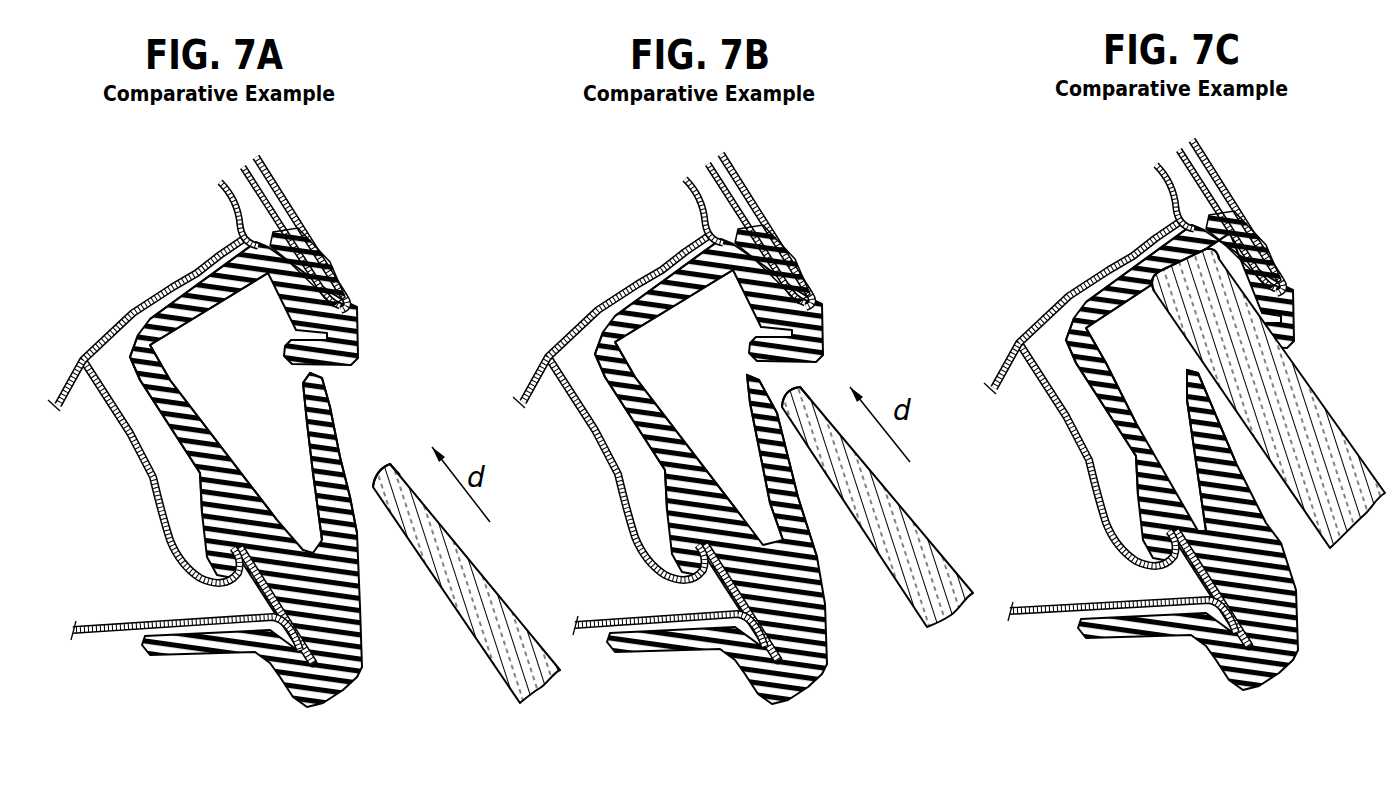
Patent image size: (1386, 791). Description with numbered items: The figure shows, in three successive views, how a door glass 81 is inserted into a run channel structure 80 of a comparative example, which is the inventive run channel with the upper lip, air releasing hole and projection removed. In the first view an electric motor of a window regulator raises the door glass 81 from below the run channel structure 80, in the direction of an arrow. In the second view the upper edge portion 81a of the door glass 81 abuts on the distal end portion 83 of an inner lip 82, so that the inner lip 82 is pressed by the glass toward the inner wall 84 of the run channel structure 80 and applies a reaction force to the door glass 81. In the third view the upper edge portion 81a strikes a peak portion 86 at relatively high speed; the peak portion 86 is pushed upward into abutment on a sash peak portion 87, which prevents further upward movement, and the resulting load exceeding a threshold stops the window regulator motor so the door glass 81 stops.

In FIG. 7A, the run channel structure 80 is at (285, 218).
In FIG. 7B, the run channel structure 80 is at (759, 230).
In FIG. 7C, the run channel structure 80 is at (1230, 216).
In FIG. 7A, the door glass 81 is at (470, 580).
In FIG. 7B, the door glass 81 is at (877, 507).
In FIG. 7C, the door glass 81 is at (1269, 398).
In FIG. 7A, the upper edge portion 81a is at (393, 465).
In FIG. 7B, the upper edge portion 81a is at (846, 369).
In FIG. 7C, the upper edge portion 81a is at (1153, 216).
In FIG. 7A, the inner lip 82 is at (353, 503).
In FIG. 7B, the inner lip 82 is at (707, 471).
In FIG. 7C, the inner lip 82 is at (1177, 457).
In FIG. 7A, the distal end portion 83 is at (313, 405).
In FIG. 7B, the distal end portion 83 is at (768, 466).
In FIG. 7C, the distal end portion 83 is at (1264, 438).
In FIG. 7A, the inner wall 84 is at (195, 443).
In FIG. 7B, the inner wall 84 is at (646, 424).
In FIG. 7C, the inner wall 84 is at (1082, 407).
In FIG. 7A, the peak portion 86 is at (223, 293).
In FIG. 7B, the peak portion 86 is at (674, 263).
In FIG. 7C, the peak portion 86 is at (1102, 276).
In FIG. 7A, the sash peak portion 87 is at (165, 280).
In FIG. 7B, the sash peak portion 87 is at (611, 311).
In FIG. 7C, the sash peak portion 87 is at (1082, 287).